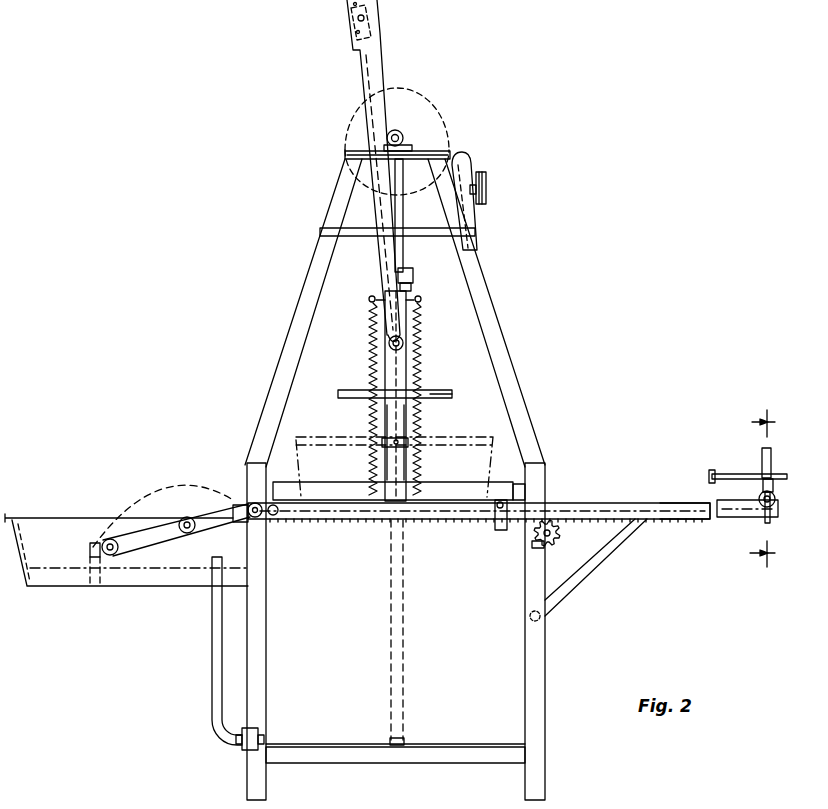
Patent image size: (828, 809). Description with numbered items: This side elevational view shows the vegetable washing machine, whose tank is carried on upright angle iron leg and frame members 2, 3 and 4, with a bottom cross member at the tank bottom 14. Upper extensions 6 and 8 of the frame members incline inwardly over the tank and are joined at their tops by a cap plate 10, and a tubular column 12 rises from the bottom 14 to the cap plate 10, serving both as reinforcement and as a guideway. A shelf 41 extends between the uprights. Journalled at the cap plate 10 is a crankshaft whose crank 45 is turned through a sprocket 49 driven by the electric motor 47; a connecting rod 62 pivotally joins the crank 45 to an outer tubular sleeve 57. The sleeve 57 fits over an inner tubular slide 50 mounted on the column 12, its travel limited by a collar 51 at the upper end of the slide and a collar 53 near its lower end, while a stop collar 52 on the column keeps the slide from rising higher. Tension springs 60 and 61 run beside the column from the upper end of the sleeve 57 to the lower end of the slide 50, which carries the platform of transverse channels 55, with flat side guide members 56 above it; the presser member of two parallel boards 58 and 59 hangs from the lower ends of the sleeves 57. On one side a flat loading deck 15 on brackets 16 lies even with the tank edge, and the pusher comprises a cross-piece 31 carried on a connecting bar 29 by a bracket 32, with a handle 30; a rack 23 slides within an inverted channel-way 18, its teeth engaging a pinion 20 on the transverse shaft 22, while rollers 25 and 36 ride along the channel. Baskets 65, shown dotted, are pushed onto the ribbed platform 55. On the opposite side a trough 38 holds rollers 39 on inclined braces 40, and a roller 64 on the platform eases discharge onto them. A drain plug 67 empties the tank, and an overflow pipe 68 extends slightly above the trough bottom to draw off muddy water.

The upright angle iron leg and frame member 2 is at (545, 783).
The upright angle iron leg and frame member 4 is at (252, 772).
The upper extension 6 is at (486, 303).
The upper extension 8 is at (300, 303).
The cap plate 10 is at (345, 152).
The tubular column 12 is at (399, 252).
The bottom 14 is at (453, 749).
The loading deck 15 is at (598, 500).
The bracket 16 is at (590, 560).
The inverted channel-way 18 is at (665, 521).
The pinion 20 is at (548, 546).
The transverse shaft 22 is at (560, 535).
The rack 23 is at (683, 521).
The roller 25 is at (747, 517).
The connecting bar 29 is at (762, 483).
The handle 30 is at (762, 452).
The cross-piece 31 is at (709, 474).
The bracket 32 is at (749, 465).
The upright angle iron leg and frame member 3 is at (755, 485).
The roller 36 is at (497, 512).
The trough 38 is at (40, 528).
The roller 39 is at (187, 515).
The inclined brace 40 is at (152, 540).
The shelf 41 is at (340, 230).
The crank 45 is at (384, 66).
The electric motor 47 is at (463, 160).
The sprocket 49 is at (412, 98).
The inner tubular slide 50 is at (406, 428).
The collar 51 is at (412, 286).
The stop collar 52 is at (413, 273).
The collar 53 is at (407, 446).
The channel 55 is at (327, 507).
The side guide member 56 is at (522, 490).
The outer tubular sleeve 57 is at (406, 376).
The board 58 is at (345, 398).
The board 59 is at (440, 398).
The tension spring 60 is at (371, 333).
The tension spring 61 is at (419, 335).
The connecting rod 62 is at (366, 112).
The roller 64 is at (273, 516).
The basket 65 is at (496, 436).
The drain plug 67 is at (265, 740).
The overflow pipe 68 is at (213, 632).